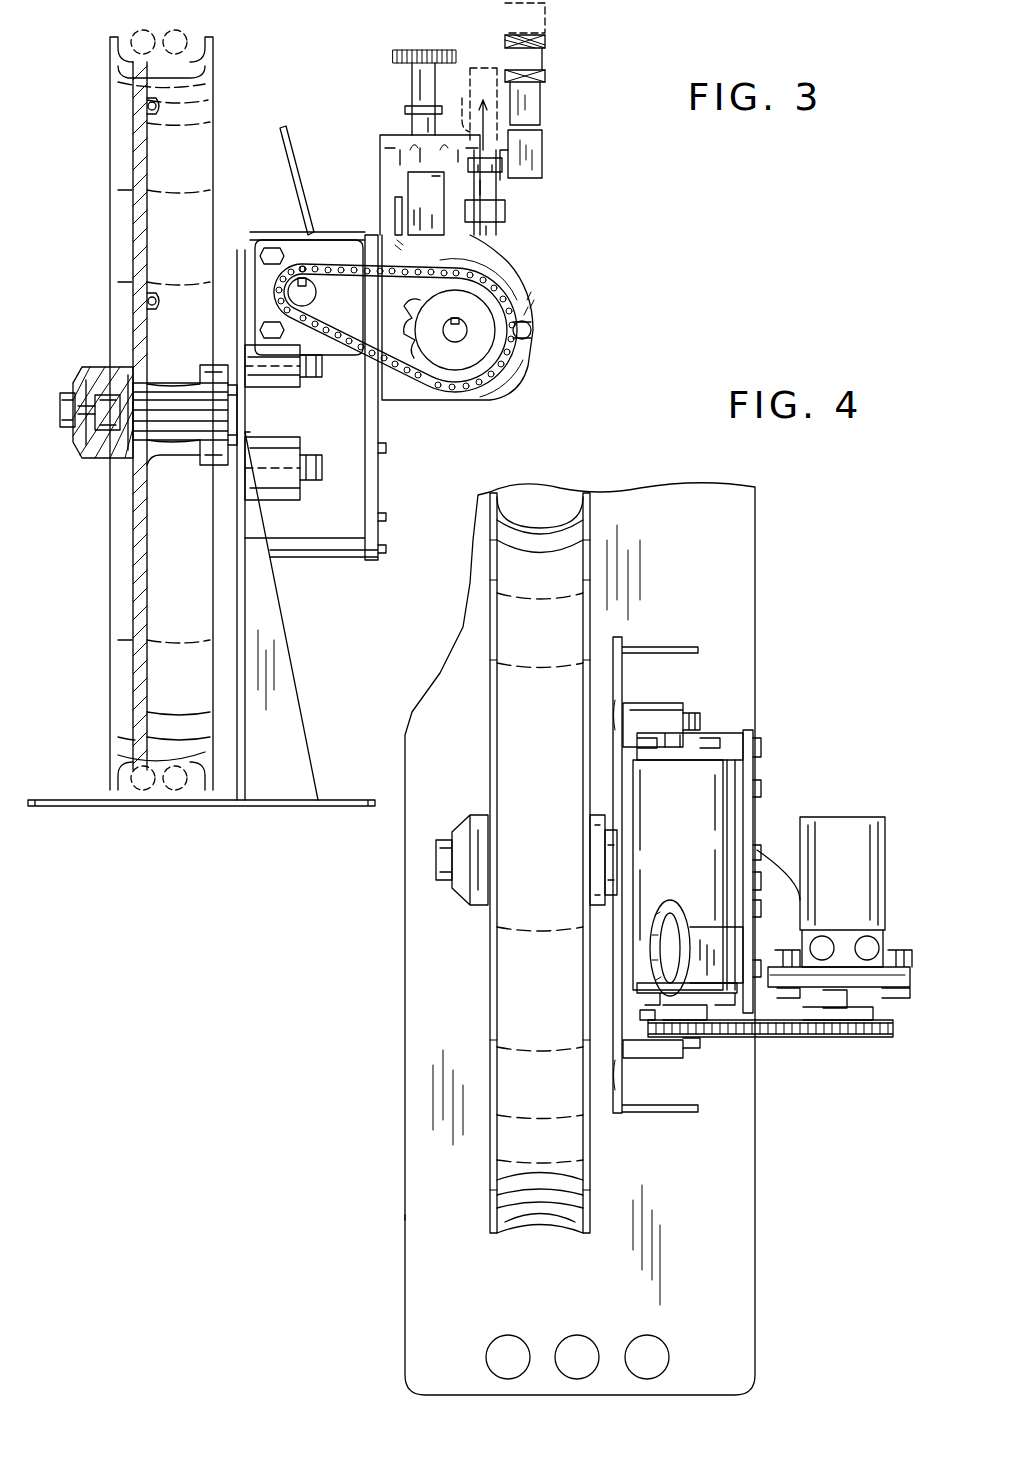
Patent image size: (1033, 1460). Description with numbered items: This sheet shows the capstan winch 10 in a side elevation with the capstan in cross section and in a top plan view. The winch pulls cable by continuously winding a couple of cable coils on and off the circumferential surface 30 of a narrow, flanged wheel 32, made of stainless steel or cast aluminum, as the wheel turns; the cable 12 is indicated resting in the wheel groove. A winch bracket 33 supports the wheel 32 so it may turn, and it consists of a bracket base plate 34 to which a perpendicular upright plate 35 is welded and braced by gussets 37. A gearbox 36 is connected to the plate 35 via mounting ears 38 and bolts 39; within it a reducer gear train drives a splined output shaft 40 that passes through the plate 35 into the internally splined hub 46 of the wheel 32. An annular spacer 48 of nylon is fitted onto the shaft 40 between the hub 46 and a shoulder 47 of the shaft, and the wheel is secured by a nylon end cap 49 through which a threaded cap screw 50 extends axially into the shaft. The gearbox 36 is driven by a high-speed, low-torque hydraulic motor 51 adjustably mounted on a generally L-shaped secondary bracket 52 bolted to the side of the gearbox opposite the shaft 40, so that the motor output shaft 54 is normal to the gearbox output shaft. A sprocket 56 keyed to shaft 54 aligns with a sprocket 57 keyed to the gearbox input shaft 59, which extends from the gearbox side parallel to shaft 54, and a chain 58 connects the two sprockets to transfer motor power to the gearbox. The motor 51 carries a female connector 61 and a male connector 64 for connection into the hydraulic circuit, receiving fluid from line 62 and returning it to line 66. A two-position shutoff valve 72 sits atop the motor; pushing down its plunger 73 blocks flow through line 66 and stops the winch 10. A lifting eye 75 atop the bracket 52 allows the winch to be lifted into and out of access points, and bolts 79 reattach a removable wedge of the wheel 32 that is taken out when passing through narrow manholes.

In FIG. 3, the winch 10 is at (600, 96).
In FIG. 4, the winch 10 is at (802, 642).
In FIG. 3, the cable 12 is at (138, 28).
In FIG. 3, the circumferential surface 30 is at (190, 34).
In FIG. 4, the circumferential surface 30 is at (545, 1212).
In FIG. 3, the wheel 32 is at (108, 128).
In FIG. 4, the wheel 32 is at (592, 500).
In FIG. 3, the winch bracket 33 is at (300, 637).
In FIG. 4, the winch bracket 33 is at (403, 1216).
In FIG. 3, the bracket base plate 34 is at (84, 806).
In FIG. 4, the bracket base plate 34 is at (757, 1243).
In FIG. 3, the upright plate 35 is at (240, 800).
In FIG. 4, the upright plate 35 is at (614, 990).
In FIG. 3, the gearbox 36 is at (368, 474).
In FIG. 4, the gearbox 36 is at (735, 782).
In FIG. 3, the gussets 37 is at (320, 741).
In FIG. 4, the gussets 37 is at (670, 1113).
In FIG. 3, the mounting ears 38 is at (284, 500).
In FIG. 4, the mounting ears 38 is at (670, 703).
In FIG. 3, the bolts 39 is at (322, 482).
In FIG. 4, the bolts 39 is at (700, 719).
In FIG. 3, the splined output shaft 40 is at (90, 455).
In FIG. 3, the internally splined hub 46 is at (176, 392).
In FIG. 3, the shoulder 47 is at (222, 450).
In FIG. 4, the shoulder 47 is at (605, 898).
In FIG. 3, the annular spacer 48 is at (205, 462).
In FIG. 4, the annular spacer 48 is at (594, 815).
In FIG. 3, the end cap 49 is at (86, 368).
In FIG. 4, the end cap 49 is at (462, 903).
In FIG. 3, the threaded cap screw 50 is at (58, 410).
In FIG. 4, the threaded cap screw 50 is at (437, 858).
In FIG. 4, the hydraulic motor 51 is at (860, 820).
In FIG. 3, the secondary bracket 52 is at (510, 272).
In FIG. 4, the secondary bracket 52 is at (757, 937).
In FIG. 3, the output shaft 54 is at (464, 340).
In FIG. 4, the output shaft 54 is at (852, 1003).
In FIG. 3, the sprocket 56 is at (398, 306).
In FIG. 3, the sprocket 57 is at (336, 270).
In FIG. 3, the chain 58 is at (286, 246).
In FIG. 4, the chain 58 is at (865, 1040).
In FIG. 3, the gearbox input shaft 59 is at (308, 322).
In FIG. 4, the gearbox input shaft 59 is at (650, 1012).
In FIG. 3, the female connector 61 is at (543, 150).
In FIG. 3, the line 62 is at (548, 30).
In FIG. 3, the male connector 64 is at (505, 190).
In FIG. 3, the line 66 is at (471, 109).
In FIG. 3, the two-position shutoff valve 72 is at (410, 92).
In FIG. 3, the plunger 73 is at (420, 50).
In FIG. 3, the lifting eye 75 is at (281, 128).
In FIG. 4, the lifting eye 75 is at (668, 900).
In FIG. 3, the bolts 79 is at (160, 106).